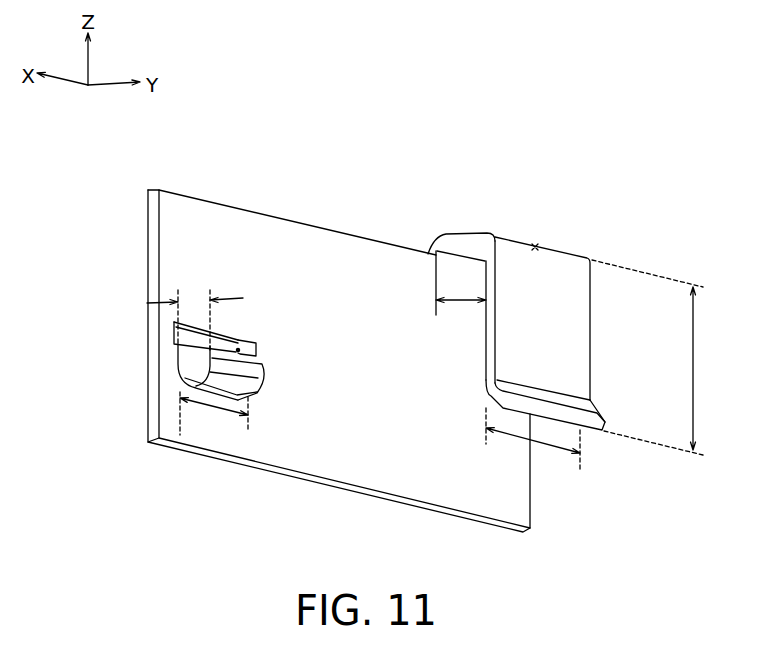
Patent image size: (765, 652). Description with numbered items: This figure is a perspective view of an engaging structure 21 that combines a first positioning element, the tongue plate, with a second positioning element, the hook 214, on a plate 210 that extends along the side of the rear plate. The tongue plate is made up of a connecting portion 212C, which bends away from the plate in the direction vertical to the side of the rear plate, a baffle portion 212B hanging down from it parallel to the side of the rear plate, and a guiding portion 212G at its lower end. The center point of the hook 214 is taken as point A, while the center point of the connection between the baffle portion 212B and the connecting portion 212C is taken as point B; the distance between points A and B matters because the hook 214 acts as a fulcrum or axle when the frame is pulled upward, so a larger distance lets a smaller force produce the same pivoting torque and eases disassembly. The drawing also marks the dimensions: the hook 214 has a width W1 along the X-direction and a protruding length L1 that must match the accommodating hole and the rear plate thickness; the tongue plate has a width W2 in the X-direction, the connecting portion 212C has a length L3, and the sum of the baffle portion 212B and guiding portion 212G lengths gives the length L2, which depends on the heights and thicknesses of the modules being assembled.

The engaging structure 21 is at (647, 163).
The base plate 210 is at (262, 213).
The baffle portion 212B is at (582, 337).
The connecting portion 212C is at (443, 241).
The guiding portion 212G is at (605, 420).
The hook 214 is at (180, 362).
The center point of the hook A is at (239, 350).
The center point of the tongue plate B is at (534, 234).
The length of the hook L1 is at (195, 311).
The length of the tongue plate L2 is at (657, 357).
The length of the connecting portion L3 is at (461, 316).
The width of the hook W1 is at (214, 415).
The width of the tongue plate W2 is at (533, 443).